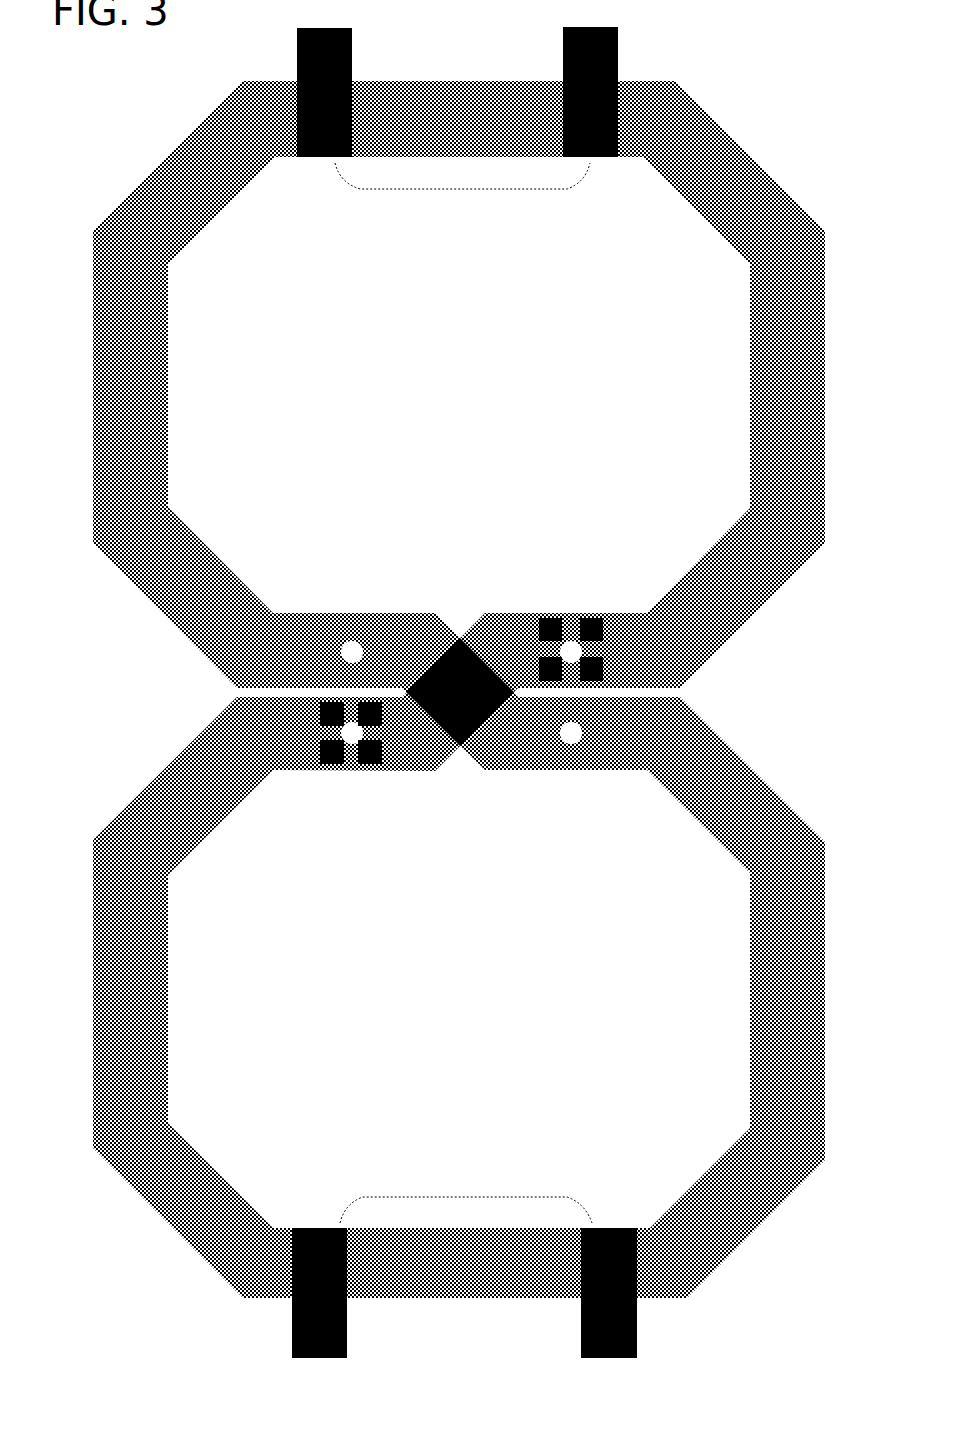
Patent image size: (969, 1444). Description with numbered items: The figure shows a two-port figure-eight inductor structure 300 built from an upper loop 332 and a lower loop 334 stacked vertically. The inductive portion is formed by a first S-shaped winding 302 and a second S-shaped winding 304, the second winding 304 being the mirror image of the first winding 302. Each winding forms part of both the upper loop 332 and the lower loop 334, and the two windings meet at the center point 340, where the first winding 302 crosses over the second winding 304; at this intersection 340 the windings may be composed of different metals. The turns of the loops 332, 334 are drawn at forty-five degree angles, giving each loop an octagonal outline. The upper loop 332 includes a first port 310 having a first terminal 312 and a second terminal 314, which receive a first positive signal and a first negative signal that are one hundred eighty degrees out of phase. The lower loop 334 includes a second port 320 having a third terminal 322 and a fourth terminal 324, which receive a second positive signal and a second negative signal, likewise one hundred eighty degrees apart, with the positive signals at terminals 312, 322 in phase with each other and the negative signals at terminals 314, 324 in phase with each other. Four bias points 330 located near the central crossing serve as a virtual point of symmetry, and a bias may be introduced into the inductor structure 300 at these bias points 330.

The inductor structure 300 is at (738, 77).
The first S-shaped winding 302 is at (178, 160).
The second S-shaped winding 304 is at (748, 172).
The first port 310 is at (463, 190).
The first terminal 312 is at (352, 67).
The second terminal 314 is at (565, 68).
The second port 320 is at (465, 1196).
The third terminal 322 is at (348, 1315).
The fourth terminal 324 is at (580, 1315).
The bias points 330 is at (352, 640).
The upper loop 332 is at (459, 385).
The lower loop 334 is at (459, 999).
The center point 340 is at (461, 640).